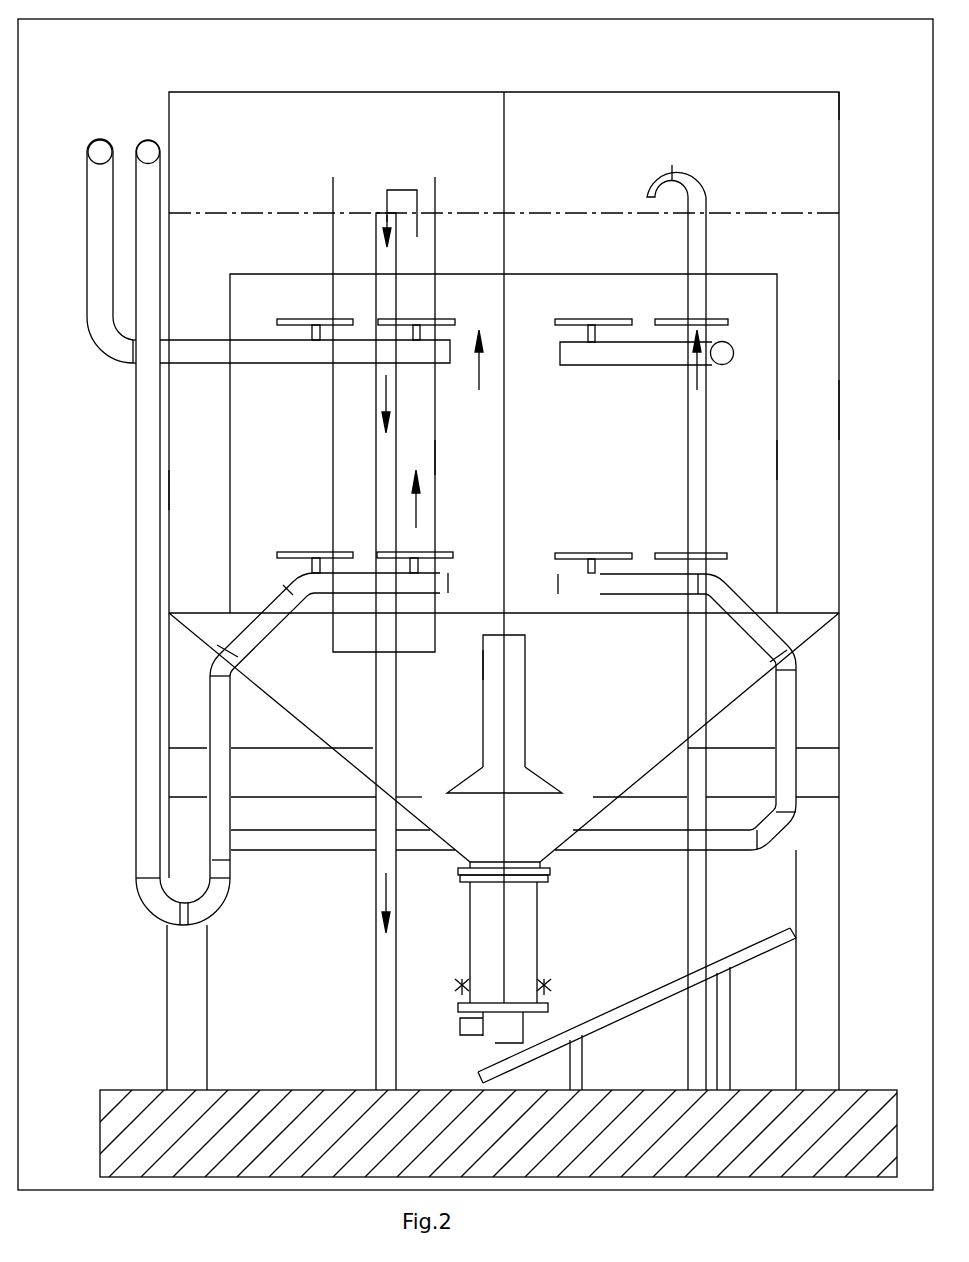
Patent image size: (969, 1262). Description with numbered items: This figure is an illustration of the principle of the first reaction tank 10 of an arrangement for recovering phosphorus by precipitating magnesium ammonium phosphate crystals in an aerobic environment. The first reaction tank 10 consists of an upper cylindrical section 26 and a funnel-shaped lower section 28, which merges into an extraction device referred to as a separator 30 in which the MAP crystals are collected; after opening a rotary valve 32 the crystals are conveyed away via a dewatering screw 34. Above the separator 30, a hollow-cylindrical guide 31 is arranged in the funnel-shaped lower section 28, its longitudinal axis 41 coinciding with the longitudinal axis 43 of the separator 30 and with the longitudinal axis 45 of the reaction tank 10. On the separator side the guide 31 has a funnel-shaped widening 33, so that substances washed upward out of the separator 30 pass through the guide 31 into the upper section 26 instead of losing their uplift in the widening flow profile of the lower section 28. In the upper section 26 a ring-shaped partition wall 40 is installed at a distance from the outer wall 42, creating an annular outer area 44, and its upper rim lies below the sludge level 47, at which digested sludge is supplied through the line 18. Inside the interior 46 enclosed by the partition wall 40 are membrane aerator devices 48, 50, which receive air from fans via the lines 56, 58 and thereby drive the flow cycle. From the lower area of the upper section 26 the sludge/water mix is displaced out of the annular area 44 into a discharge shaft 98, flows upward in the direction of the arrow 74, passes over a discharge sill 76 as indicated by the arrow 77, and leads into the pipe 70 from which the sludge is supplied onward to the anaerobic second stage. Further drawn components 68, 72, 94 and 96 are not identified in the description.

The first reaction tank 10 is at (845, 72).
The line 18 is at (713, 172).
The upper cylindrical section 26 is at (840, 352).
The funnel-shaped lower section 28 is at (733, 700).
The separator 30 is at (470, 962).
The guide 31 is at (525, 687).
The rotary valve 32 is at (460, 1025).
The funnel-shaped widening 33 is at (545, 777).
The dewatering screw 34 is at (757, 955).
The partition wall 40 is at (779, 322).
The longitudinal axis of the guide 41 is at (502, 665).
The outer wall 42 is at (840, 415).
The longitudinal axis of the separator 43 is at (502, 932).
The outer area 44 is at (190, 488).
The longitudinal axis of the reaction tank 45 is at (505, 457).
The interior 46 is at (740, 458).
The sludge level 47 is at (740, 205).
The aerator device 48 is at (590, 553).
The aerator device 50 is at (592, 320).
The line 56 is at (148, 543).
The line 58 is at (112, 342).
The draft tube 68 is at (350, 627).
The pipe 70 is at (387, 732).
The nozzle flange 72 is at (458, 340).
The arrow 74 is at (417, 488).
The discharge sill 76 is at (388, 234).
The arrow 77 is at (385, 400).
The valve 94 is at (456, 982).
The valve 96 is at (550, 982).
The discharge shaft 98 is at (435, 457).